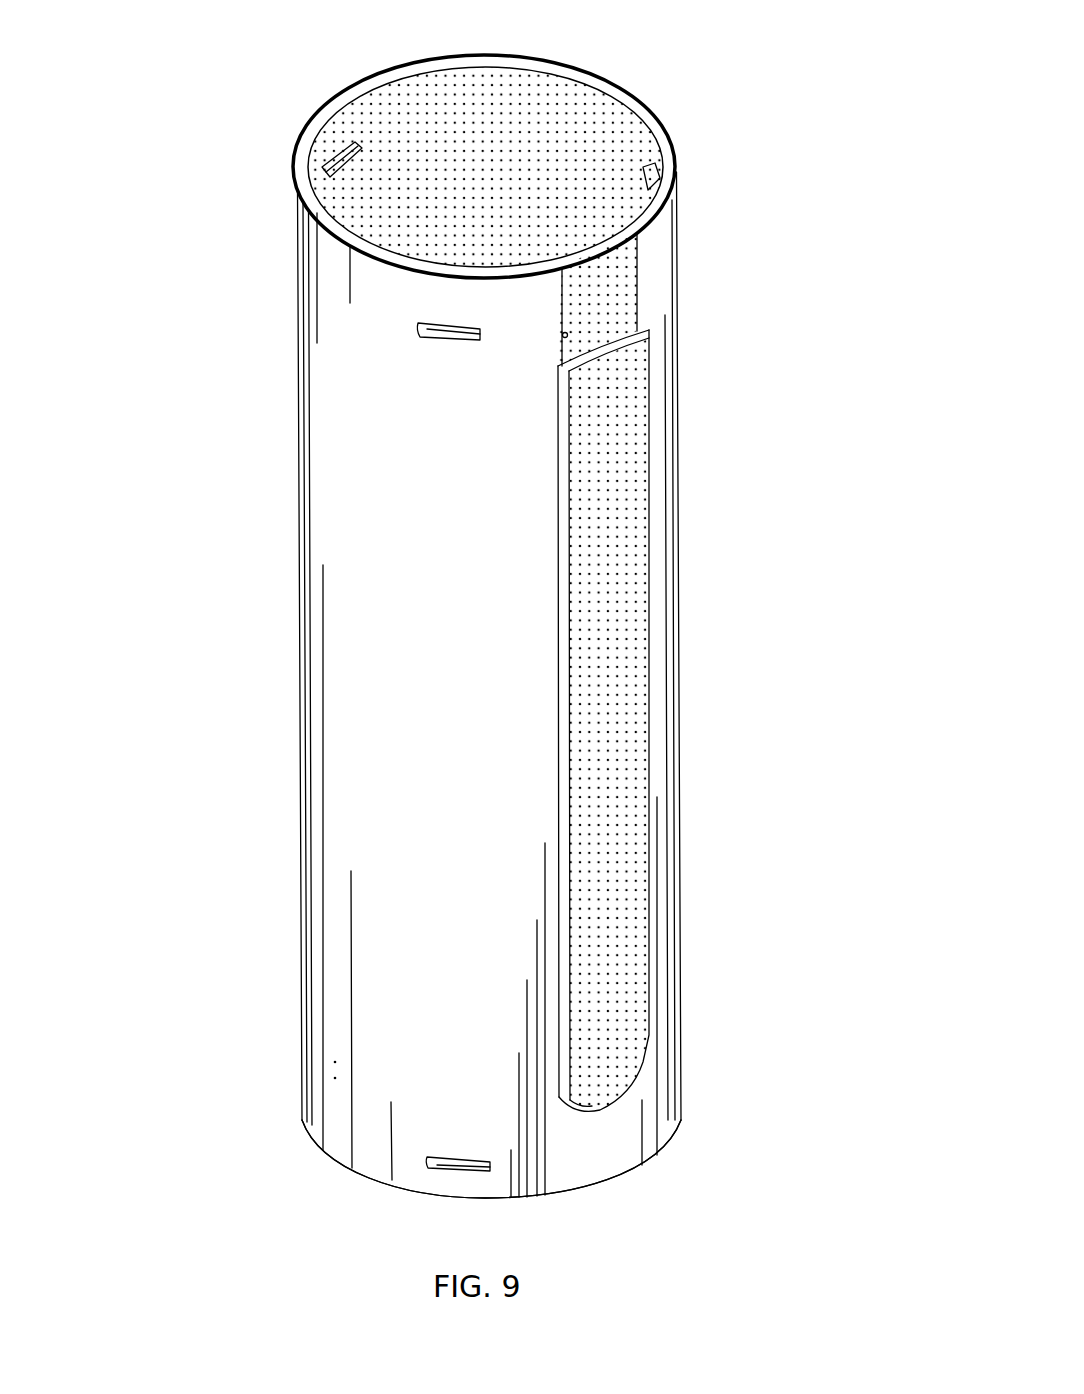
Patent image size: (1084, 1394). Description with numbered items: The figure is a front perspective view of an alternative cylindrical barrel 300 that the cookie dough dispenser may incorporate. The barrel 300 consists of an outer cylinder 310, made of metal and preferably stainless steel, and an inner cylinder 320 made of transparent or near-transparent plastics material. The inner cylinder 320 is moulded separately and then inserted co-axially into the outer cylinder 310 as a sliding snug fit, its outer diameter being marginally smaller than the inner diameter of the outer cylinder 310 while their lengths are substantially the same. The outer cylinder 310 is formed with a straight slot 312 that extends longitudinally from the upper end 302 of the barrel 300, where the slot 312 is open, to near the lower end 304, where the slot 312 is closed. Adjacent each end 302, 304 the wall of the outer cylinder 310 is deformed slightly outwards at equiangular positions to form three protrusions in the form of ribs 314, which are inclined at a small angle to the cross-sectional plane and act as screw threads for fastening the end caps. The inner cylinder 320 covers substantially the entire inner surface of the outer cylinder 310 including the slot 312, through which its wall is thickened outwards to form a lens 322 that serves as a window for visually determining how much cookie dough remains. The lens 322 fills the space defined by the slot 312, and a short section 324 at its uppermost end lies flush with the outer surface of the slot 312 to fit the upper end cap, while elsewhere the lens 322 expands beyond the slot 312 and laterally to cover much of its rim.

The cylindrical barrel 300 is at (215, 270).
The upper end 302 is at (655, 276).
The lower end 304 is at (598, 1162).
The outer cylinder 310 is at (298, 596).
The straight slot 312 is at (562, 340).
The ribs 314 is at (667, 210).
The inner cylinder 320 is at (505, 122).
The lens 322 is at (633, 777).
The short section 324 is at (618, 273).